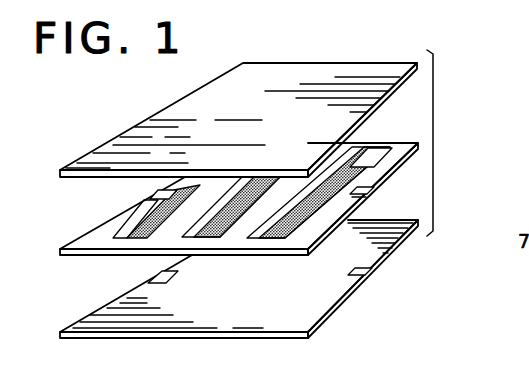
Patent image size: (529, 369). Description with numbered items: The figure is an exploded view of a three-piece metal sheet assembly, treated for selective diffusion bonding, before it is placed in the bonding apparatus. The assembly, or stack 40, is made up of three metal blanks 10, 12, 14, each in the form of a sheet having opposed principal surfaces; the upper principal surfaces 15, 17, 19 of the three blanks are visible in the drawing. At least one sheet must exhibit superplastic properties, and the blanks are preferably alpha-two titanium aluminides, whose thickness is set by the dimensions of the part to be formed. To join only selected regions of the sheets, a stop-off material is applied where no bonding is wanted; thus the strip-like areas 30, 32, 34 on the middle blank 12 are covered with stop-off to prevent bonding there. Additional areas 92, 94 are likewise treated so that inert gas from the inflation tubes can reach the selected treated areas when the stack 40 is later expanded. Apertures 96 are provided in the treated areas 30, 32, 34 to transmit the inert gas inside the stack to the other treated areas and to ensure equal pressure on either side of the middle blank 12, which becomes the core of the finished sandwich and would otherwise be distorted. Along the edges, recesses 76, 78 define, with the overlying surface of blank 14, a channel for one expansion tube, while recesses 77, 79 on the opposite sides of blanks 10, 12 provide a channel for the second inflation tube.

The metal blank 10 is at (394, 246).
The metal blank 12 is at (336, 224).
The metal blank 14 is at (388, 100).
The upper principal surface 15 is at (316, 314).
The upper principal surface 17 is at (239, 240).
The upper principal surface 19 is at (293, 70).
The stop-off treated area 30 is at (297, 239).
The stop-off treated area 32 is at (195, 231).
The stop-off treated area 34 is at (123, 232).
The stack 40 is at (433, 148).
The recess 76 is at (155, 272).
The recess 77 is at (368, 276).
The recess 78 is at (162, 194).
The recess 79 is at (361, 194).
The treated area 92 is at (373, 184).
The treated area 94 is at (185, 190).
The apertures 96 is at (341, 176).